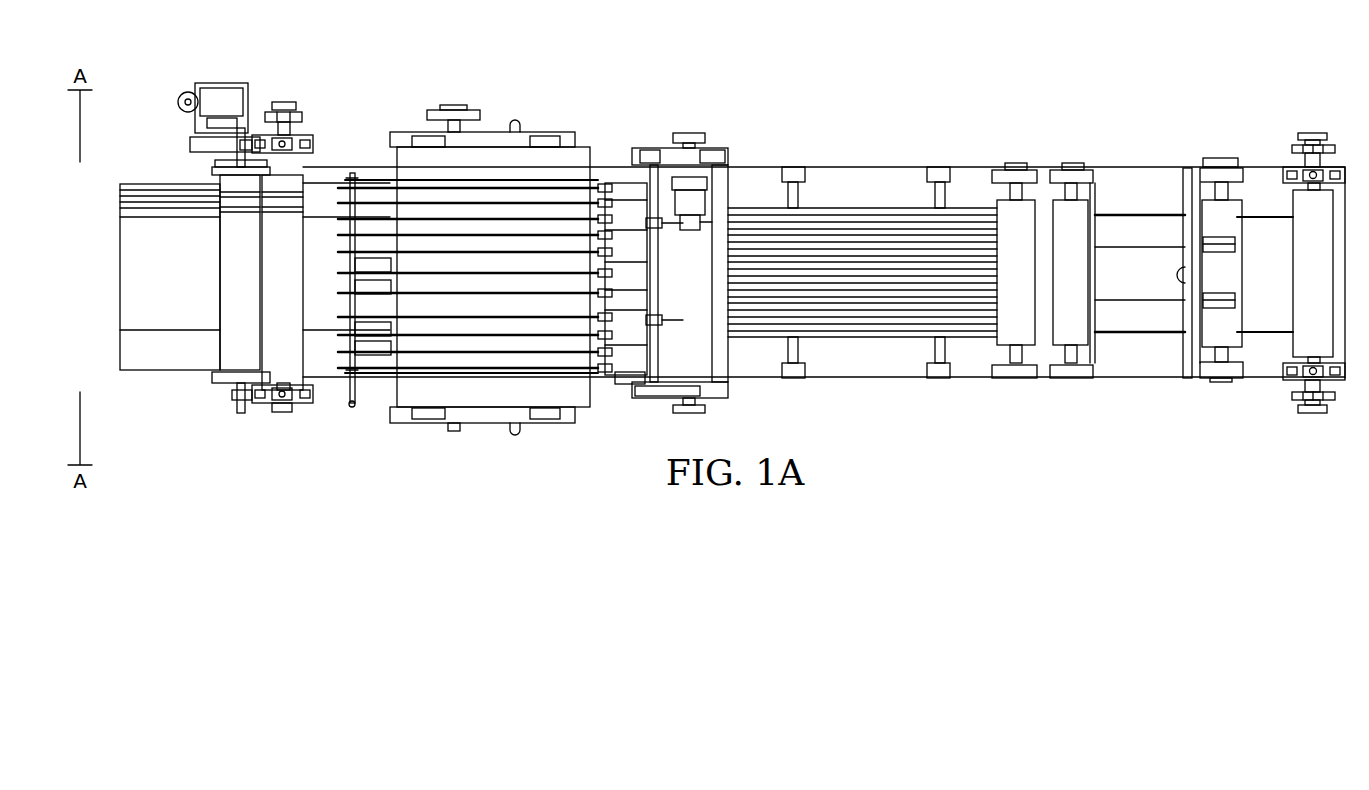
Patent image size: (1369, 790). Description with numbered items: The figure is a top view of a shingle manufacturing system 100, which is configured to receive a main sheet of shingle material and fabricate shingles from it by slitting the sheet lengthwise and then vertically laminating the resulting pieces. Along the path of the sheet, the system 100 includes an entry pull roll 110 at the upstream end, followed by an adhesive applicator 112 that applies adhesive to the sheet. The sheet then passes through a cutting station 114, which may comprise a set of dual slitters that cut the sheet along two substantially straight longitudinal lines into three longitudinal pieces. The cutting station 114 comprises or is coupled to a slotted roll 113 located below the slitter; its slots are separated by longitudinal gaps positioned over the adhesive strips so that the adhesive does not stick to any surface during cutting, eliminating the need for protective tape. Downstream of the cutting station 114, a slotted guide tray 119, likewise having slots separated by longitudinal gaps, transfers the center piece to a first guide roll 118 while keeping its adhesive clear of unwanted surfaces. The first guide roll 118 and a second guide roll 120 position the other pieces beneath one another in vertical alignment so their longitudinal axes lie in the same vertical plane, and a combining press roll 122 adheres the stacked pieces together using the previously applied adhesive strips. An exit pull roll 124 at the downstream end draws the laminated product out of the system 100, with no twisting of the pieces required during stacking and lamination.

The shingle manufacturing system 100 is at (378, 48).
The entry pull roll 110 is at (305, 414).
The adhesive applicator 112 is at (502, 132).
The slotted roll 113 is at (706, 193).
The cutting station 114 is at (688, 132).
The first guide roll 118 is at (1014, 168).
The slotted guide tray 119 is at (851, 206).
The second guide roll 120 is at (1070, 168).
The combining press roll 122 is at (1222, 157).
The exit pull roll 124 is at (1317, 131).